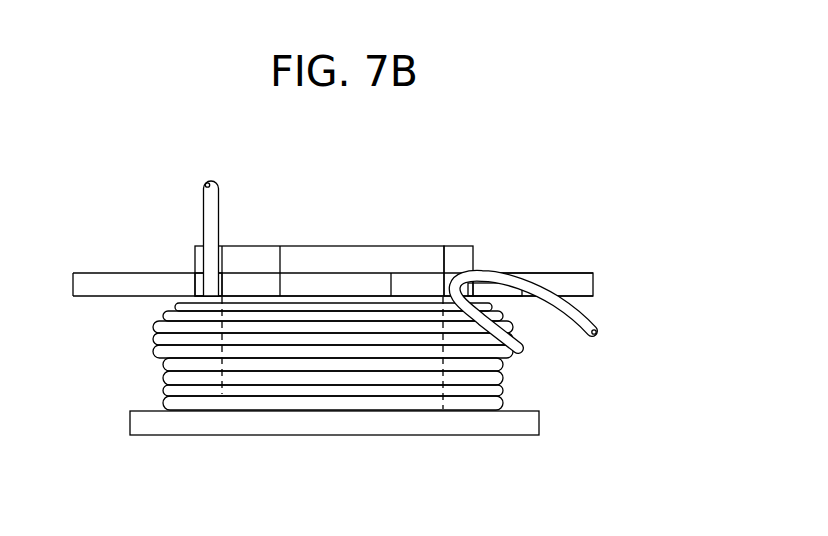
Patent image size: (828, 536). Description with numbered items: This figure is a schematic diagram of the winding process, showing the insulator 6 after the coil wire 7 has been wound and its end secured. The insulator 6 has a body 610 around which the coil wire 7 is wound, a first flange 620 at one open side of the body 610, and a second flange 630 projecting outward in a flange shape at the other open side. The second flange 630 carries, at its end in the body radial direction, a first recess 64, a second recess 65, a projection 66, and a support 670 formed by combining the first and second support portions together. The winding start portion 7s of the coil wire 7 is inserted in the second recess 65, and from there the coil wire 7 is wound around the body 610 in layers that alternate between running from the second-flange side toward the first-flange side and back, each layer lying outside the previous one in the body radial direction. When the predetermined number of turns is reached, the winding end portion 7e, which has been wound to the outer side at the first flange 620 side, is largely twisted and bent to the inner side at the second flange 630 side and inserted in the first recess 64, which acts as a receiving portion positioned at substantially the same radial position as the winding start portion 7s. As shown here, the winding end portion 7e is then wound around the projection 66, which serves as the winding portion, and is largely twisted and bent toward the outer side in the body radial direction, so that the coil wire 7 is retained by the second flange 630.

The insulator 6 is at (607, 273).
The coil wire 7 is at (399, 234).
The winding start portion 7s is at (203, 212).
The winding end portion 7e is at (581, 320).
The first recess 64 is at (466, 295).
The second recess 65 is at (207, 291).
The projection 66 is at (496, 293).
The body 610 is at (222, 396).
The first flange 620 is at (503, 428).
The second flange 630 is at (558, 269).
The support 670 is at (357, 278).